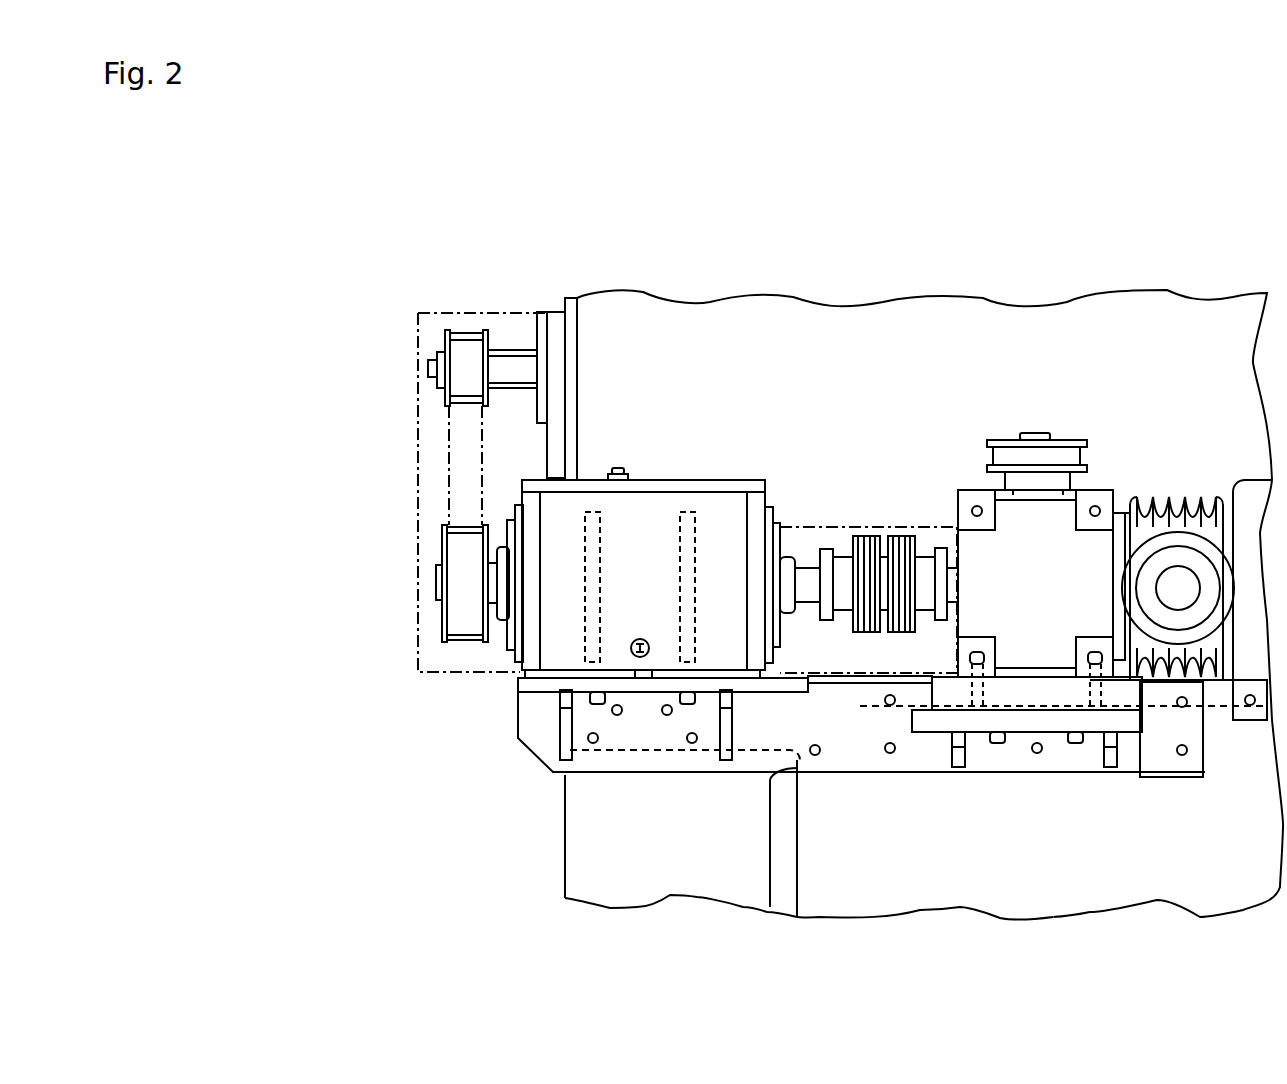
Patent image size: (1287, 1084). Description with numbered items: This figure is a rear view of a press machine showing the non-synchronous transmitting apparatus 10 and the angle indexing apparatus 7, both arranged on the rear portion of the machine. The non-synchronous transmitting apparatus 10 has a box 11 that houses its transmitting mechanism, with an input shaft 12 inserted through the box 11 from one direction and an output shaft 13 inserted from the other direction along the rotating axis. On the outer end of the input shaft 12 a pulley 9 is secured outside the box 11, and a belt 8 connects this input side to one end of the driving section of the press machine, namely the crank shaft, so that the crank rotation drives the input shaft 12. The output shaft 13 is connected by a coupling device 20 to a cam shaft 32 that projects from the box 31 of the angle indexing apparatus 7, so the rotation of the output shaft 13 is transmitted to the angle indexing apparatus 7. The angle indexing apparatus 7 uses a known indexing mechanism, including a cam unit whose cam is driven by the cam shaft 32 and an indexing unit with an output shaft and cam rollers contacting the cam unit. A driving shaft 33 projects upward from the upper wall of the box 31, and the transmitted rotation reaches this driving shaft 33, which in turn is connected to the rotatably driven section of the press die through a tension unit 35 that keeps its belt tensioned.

The angle indexing apparatus 7 is at (1108, 478).
The belt 8 is at (448, 437).
The pulley 9 is at (462, 552).
The non-synchronous transmitting apparatus 10 is at (678, 462).
The box 11 is at (530, 625).
The input shaft 12 is at (440, 580).
The output shaft 13 is at (808, 578).
The coupling device 20 is at (885, 520).
The box 31 is at (982, 620).
The cam shaft 32 is at (955, 625).
The driving shaft 33 is at (1037, 488).
The tension unit 35 is at (1026, 368).